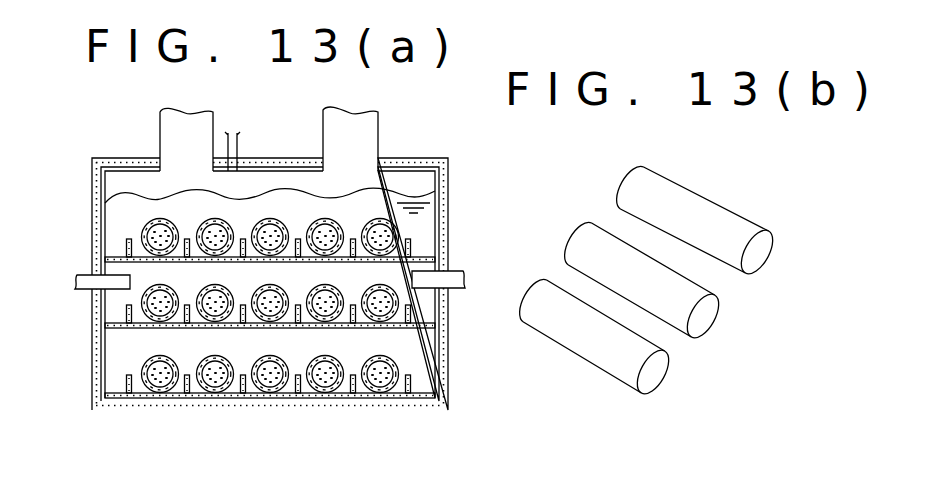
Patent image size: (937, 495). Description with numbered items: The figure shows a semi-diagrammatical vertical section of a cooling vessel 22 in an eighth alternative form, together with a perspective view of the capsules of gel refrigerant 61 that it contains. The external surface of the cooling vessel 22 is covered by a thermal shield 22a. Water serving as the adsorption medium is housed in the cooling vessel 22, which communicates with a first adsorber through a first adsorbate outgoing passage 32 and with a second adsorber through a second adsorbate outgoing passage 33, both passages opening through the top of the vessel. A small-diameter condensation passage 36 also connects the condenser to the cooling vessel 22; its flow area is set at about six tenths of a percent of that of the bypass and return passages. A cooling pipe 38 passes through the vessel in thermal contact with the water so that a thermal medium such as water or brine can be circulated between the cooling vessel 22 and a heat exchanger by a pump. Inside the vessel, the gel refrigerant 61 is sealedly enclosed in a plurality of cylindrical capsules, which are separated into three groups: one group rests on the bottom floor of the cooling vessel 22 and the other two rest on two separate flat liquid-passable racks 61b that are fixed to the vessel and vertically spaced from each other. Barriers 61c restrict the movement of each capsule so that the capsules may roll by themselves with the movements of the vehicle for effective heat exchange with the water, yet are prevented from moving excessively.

The cooling vessel 22 is at (401, 160).
The thermal shield 22a is at (94, 215).
The first adsorbate outgoing passage 32 is at (214, 131).
The second adsorbate outgoing passage 33 is at (363, 140).
The condensation passage 36 is at (238, 152).
The cooling pipe 38 is at (453, 270).
The gel refrigerant 61 is at (279, 340).
The liquid-passable racks 61b is at (126, 215).
The barriers 61c is at (441, 315).